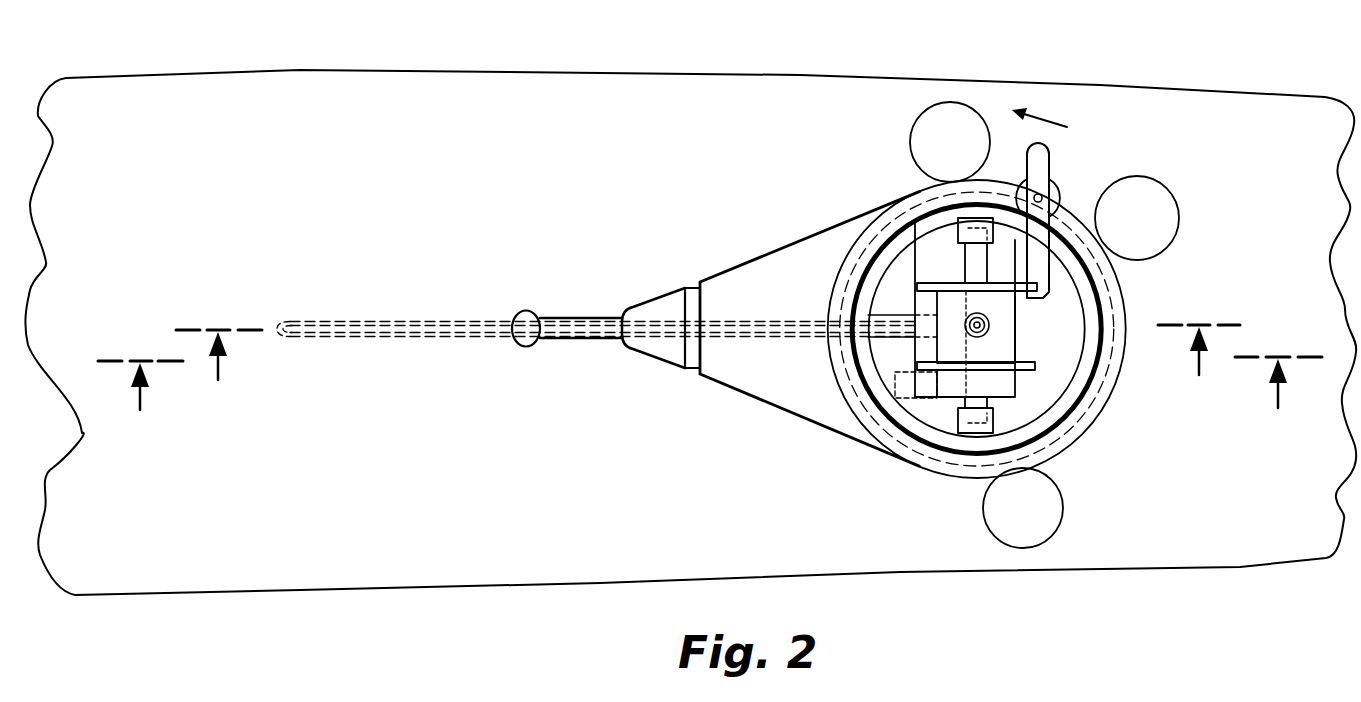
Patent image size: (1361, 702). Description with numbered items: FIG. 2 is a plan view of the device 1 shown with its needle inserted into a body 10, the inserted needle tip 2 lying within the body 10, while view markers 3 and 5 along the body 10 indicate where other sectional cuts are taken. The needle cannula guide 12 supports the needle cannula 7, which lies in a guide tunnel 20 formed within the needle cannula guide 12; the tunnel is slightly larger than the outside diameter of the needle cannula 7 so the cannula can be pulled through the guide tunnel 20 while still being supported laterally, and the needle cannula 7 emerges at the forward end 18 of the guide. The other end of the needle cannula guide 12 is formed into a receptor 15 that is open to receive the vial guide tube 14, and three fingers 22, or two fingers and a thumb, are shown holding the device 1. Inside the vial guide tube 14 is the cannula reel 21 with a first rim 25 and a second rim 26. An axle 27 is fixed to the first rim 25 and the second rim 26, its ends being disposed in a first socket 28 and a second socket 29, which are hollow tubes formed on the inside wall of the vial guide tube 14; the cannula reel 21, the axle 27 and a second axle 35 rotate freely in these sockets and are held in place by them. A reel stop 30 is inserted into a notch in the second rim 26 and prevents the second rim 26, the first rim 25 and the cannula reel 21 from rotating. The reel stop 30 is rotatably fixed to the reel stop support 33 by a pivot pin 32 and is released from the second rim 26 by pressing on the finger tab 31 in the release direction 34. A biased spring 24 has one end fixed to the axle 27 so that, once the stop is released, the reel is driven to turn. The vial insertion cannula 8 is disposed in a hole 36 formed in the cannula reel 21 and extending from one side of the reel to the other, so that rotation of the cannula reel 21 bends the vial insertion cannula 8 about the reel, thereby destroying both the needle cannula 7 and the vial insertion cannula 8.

The device 1 is at (729, 154).
The probe needle 2 is at (596, 330).
The section line 3- 3 is at (710, 403).
The section line 5- 5 is at (708, 371).
The needle cannula 7 is at (572, 318).
The vial insertion cannula 8 is at (990, 325).
The body 10 is at (455, 70).
The needle cannula guide 12 is at (708, 378).
The vial guide tube 14 is at (878, 428).
The receptor 15 is at (1082, 218).
The nose cone 18 is at (692, 288).
The guide tunnel 20 is at (748, 312).
The cannula reel 21 is at (913, 306).
The fingers 22 is at (933, 159).
The biased spring 24 is at (917, 428).
The first rim 25 is at (1037, 367).
The second rim 26 is at (917, 283).
The axle 27 is at (937, 280).
The first socket 28 is at (958, 232).
The second socket 29 is at (955, 418).
The reel stop 30 is at (1050, 268).
The finger tab 31 is at (1052, 170).
The pivot pin 32 is at (1063, 197).
The reel stop support 33 is at (1072, 214).
The release direction 34 is at (1057, 120).
The second axle 35 is at (993, 405).
The hole 36 is at (990, 330).